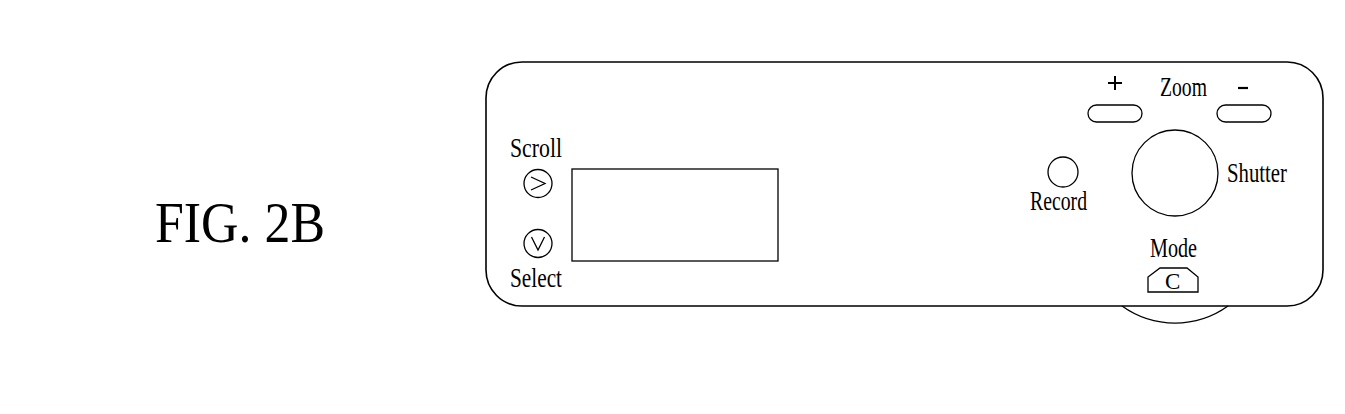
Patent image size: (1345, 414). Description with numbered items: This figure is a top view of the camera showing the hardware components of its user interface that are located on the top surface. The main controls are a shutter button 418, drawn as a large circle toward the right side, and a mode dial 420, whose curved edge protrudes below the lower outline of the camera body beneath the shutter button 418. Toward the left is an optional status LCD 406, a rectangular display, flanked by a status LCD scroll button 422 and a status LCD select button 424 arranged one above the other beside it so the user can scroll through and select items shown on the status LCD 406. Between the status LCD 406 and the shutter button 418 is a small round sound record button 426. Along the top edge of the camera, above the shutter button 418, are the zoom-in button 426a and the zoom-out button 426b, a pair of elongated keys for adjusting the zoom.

The status LCD 406 is at (672, 261).
The shutter button 418 is at (1140, 204).
The mode dial 420 is at (1210, 322).
The status LCD scroll button 422 is at (524, 184).
The status LCD select button 424 is at (524, 244).
The sound record button 426 is at (1048, 164).
The zoom-in button 426a is at (1135, 105).
The zoom-out button 426b is at (1262, 105).